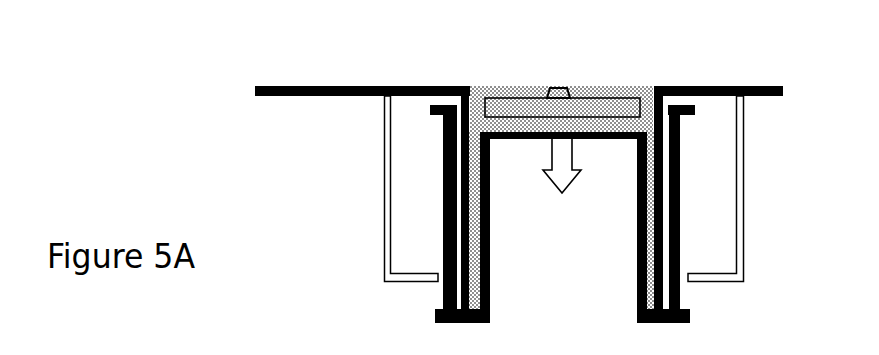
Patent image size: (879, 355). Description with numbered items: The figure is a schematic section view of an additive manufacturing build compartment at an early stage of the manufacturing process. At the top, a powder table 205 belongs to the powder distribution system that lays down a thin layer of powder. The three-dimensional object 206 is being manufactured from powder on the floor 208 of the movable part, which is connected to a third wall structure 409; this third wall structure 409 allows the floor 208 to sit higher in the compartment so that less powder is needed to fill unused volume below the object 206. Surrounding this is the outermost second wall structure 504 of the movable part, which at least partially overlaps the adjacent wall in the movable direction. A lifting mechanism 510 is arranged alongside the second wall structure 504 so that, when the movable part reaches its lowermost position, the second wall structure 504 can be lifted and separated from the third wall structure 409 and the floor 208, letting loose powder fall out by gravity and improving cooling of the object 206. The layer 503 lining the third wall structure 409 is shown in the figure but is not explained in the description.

The powder table 205 is at (712, 87).
The three-dimensional object 206 is at (563, 85).
The floor 208 is at (532, 140).
The third wall structure 409 is at (488, 270).
The filler material 503 is at (476, 243).
The second wall structure 504 is at (444, 223).
The lifting mechanism 510 is at (384, 267).